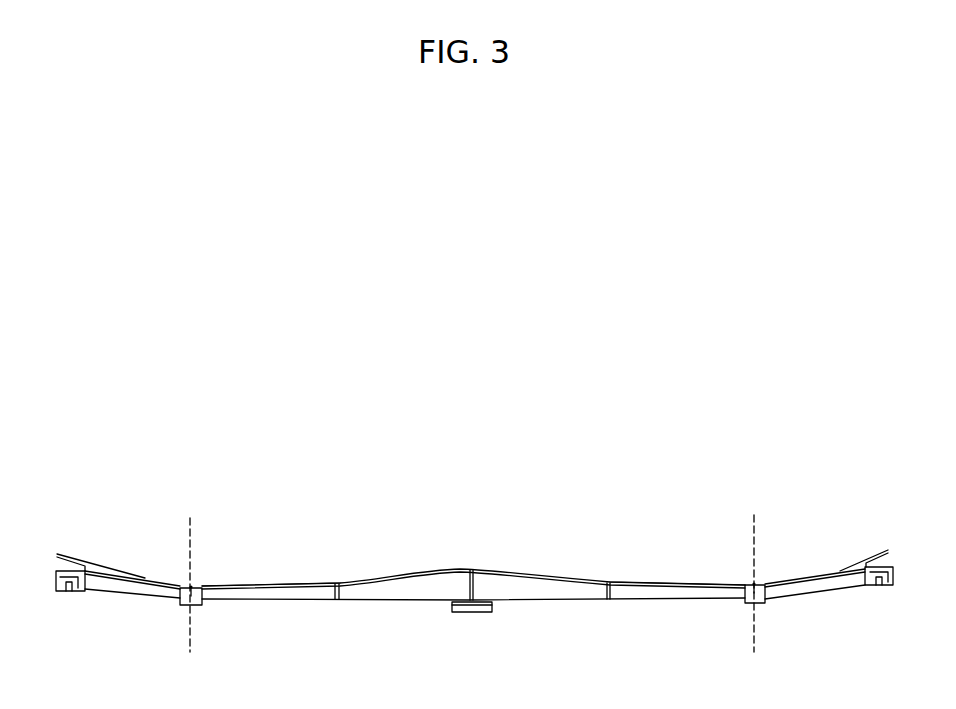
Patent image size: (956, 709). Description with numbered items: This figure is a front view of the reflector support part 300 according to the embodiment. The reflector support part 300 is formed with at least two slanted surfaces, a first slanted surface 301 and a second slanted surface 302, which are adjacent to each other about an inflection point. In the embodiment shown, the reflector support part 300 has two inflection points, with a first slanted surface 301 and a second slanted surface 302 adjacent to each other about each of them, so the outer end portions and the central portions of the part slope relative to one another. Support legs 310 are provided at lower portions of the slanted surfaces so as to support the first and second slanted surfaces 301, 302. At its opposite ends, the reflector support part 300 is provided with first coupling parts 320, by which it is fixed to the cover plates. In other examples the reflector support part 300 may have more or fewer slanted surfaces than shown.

The reflector support part 300 is at (260, 408).
The first slanted surface 301 is at (113, 570).
The second slanted surface 302 is at (361, 577).
The support legs 310 is at (340, 593).
The first coupling parts 320 is at (73, 586).